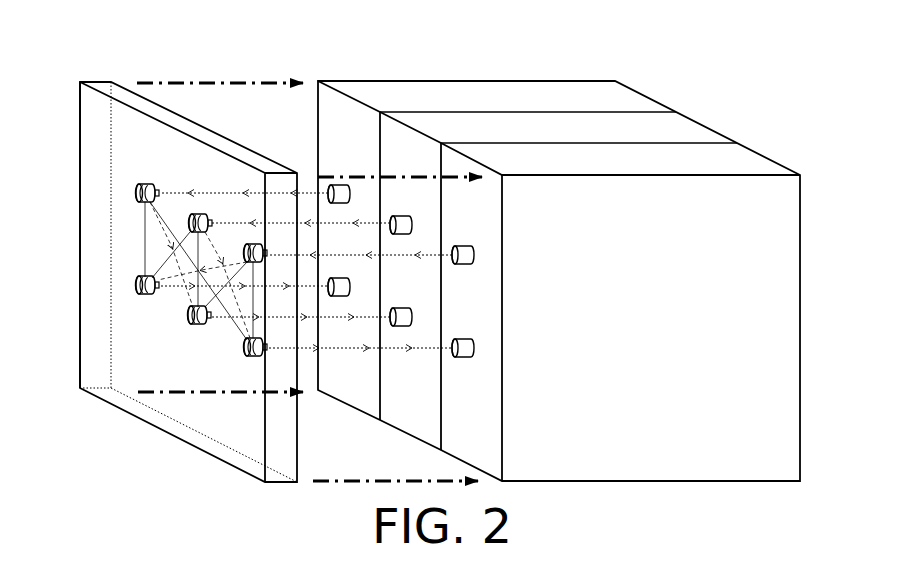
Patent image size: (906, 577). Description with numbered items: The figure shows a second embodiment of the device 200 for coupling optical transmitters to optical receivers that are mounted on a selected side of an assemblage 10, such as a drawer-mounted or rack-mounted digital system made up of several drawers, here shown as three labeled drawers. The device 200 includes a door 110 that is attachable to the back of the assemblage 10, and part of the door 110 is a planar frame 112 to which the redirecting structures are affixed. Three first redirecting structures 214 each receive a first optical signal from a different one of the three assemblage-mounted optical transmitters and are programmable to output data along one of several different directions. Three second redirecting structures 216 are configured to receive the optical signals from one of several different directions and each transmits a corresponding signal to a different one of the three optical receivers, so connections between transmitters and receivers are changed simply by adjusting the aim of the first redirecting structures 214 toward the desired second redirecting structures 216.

The device 200 is at (61, 84).
The door 110 is at (95, 80).
The planar frame 112 is at (80, 267).
The assemblage 10 is at (580, 82).
The first redirecting structures 214 is at (145, 183).
The second redirecting structures 216 is at (145, 294).